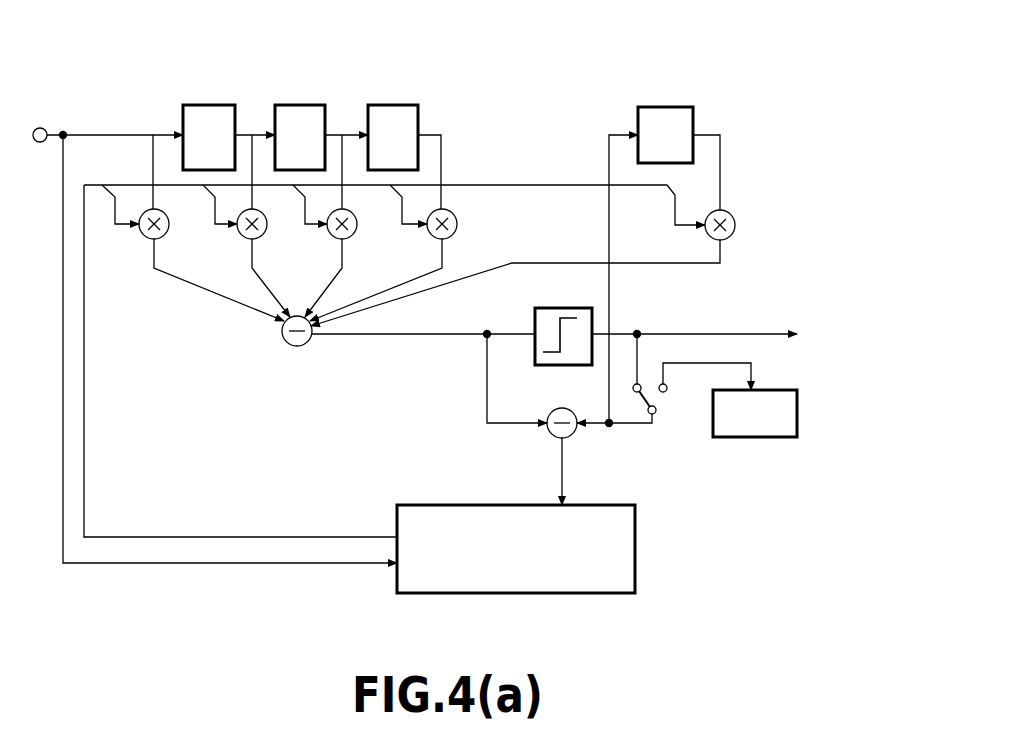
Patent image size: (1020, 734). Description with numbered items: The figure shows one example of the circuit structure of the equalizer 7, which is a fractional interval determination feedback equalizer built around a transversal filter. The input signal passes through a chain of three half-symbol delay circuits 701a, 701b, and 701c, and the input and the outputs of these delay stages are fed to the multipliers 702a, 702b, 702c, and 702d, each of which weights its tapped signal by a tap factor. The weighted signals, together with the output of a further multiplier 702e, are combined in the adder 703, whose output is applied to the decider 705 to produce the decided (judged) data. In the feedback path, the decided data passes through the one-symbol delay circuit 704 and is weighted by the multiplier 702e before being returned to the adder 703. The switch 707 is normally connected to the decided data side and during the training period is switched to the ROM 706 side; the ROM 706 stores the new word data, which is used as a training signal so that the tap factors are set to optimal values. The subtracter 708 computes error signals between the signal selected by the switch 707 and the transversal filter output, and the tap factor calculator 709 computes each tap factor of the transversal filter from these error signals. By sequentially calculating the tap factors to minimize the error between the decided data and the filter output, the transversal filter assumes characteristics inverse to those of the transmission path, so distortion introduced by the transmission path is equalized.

The equalizer 7 is at (518, 120).
The half-symbol delay circuit 701a is at (210, 105).
The half-symbol delay circuit 701b is at (300, 105).
The half-symbol delay circuit 701c is at (395, 105).
The multiplier 702a is at (148, 240).
The multiplier 702b is at (267, 228).
The multiplier 702c is at (358, 225).
The multiplier 702d is at (458, 224).
The multiplier 702e is at (736, 225).
The adder 703 is at (297, 346).
The one-symbol delay circuit 704 is at (665, 107).
The decider 705 is at (535, 316).
The ROM 706 is at (798, 415).
The switch 707 is at (657, 398).
The subtracter 708 is at (575, 435).
The tap factor calculator 709 is at (637, 548).